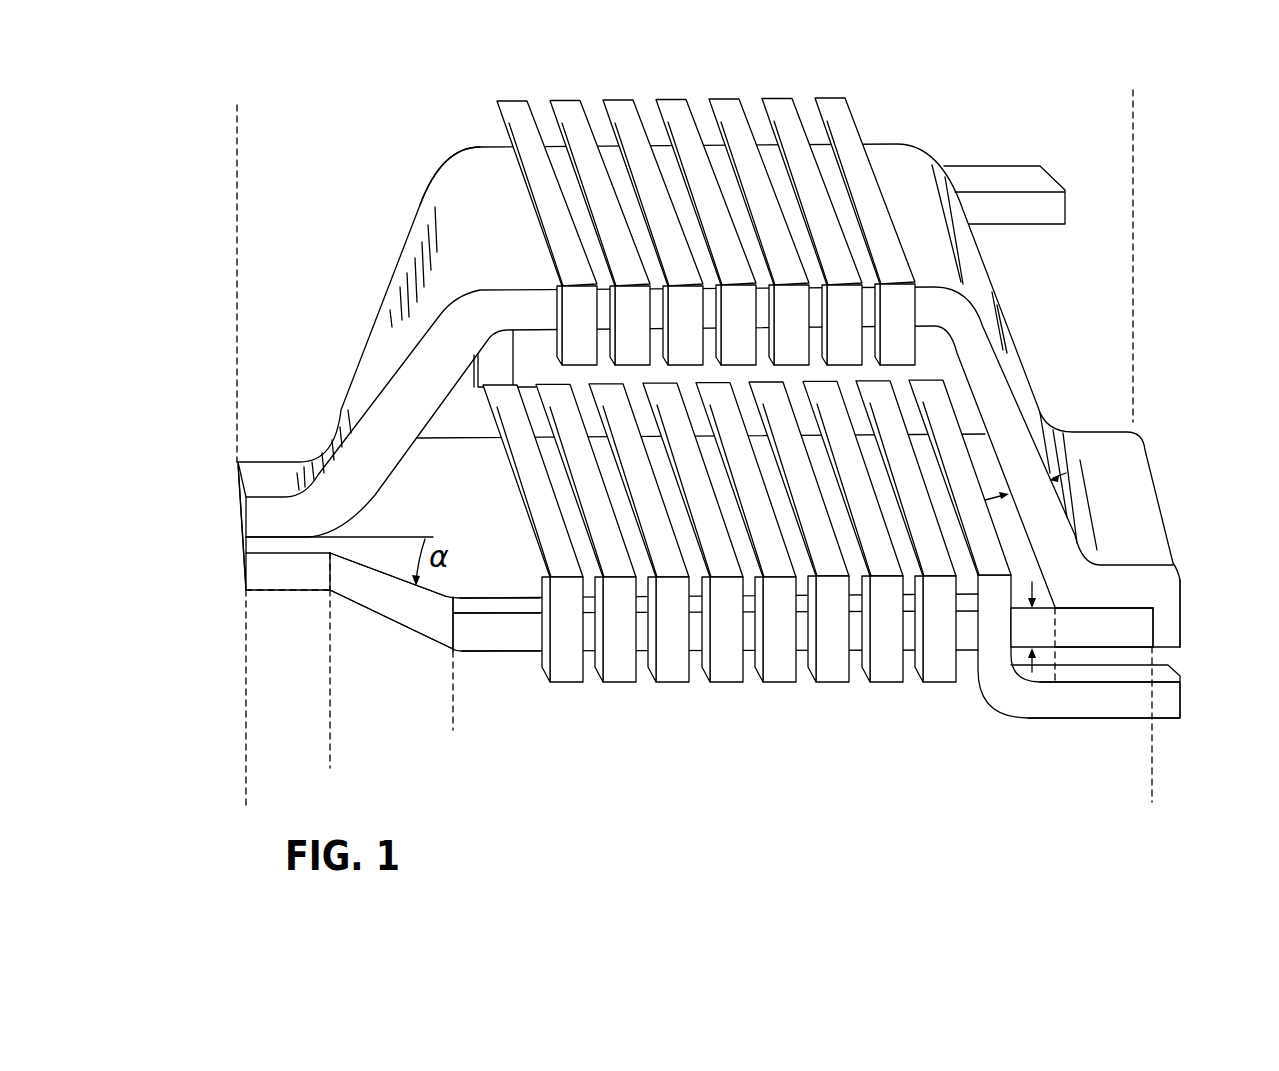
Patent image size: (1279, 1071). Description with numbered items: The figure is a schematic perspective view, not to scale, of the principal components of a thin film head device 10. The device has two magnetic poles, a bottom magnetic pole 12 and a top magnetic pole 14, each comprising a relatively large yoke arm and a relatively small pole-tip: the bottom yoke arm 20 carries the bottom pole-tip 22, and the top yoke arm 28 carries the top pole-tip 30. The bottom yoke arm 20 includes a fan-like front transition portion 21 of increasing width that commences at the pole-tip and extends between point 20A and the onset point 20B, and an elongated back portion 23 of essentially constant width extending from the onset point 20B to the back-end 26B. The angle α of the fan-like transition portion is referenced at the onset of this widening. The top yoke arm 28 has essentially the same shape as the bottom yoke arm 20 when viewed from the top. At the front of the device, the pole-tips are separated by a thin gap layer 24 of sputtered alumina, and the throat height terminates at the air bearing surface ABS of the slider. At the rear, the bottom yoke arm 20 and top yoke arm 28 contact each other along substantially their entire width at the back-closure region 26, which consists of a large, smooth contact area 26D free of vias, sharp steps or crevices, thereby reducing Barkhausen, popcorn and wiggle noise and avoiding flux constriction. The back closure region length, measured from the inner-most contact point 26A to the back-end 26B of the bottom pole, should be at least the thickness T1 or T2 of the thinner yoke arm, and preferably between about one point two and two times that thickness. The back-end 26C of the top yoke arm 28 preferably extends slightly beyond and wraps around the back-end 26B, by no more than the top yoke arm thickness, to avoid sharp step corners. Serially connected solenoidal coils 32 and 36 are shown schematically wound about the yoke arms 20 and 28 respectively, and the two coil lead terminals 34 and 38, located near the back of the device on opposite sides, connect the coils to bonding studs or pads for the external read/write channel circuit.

The TFH device 10 is at (394, 210).
The bottom magnetic pole 12 is at (246, 805).
The top magnetic pole 14 is at (237, 92).
The bottom yoke arm 20 is at (713, 692).
The front end of fan-like transition portion 20A is at (333, 578).
The onset point 20B is at (448, 645).
The fan-like front transition portion 21 is at (453, 729).
The bottom pole-tip 22 is at (330, 630).
The elongated back portion 23 is at (1152, 725).
The gap layer 24 is at (263, 548).
The back-closure region 26 is at (1131, 613).
The inner-most point of contact 26A is at (1052, 612).
The back-end of bottom yoke arm 26B is at (1153, 627).
The back-end of top yoke arm 26C is at (1207, 603).
The contact area 26D is at (1114, 606).
The top yoke arm 28 is at (465, 173).
The top pole-tip 30 is at (268, 476).
The bottom pole solenoidal coil 32 is at (778, 660).
The coil lead terminal 34 is at (1165, 696).
The top pole solenoidal coil 36 is at (782, 110).
The coil lead terminal 38 is at (987, 172).
The air bearing surface ABS is at (243, 548).
The yoke arm thickness T1 is at (1033, 627).
The yoke arm thickness T2 is at (1022, 487).